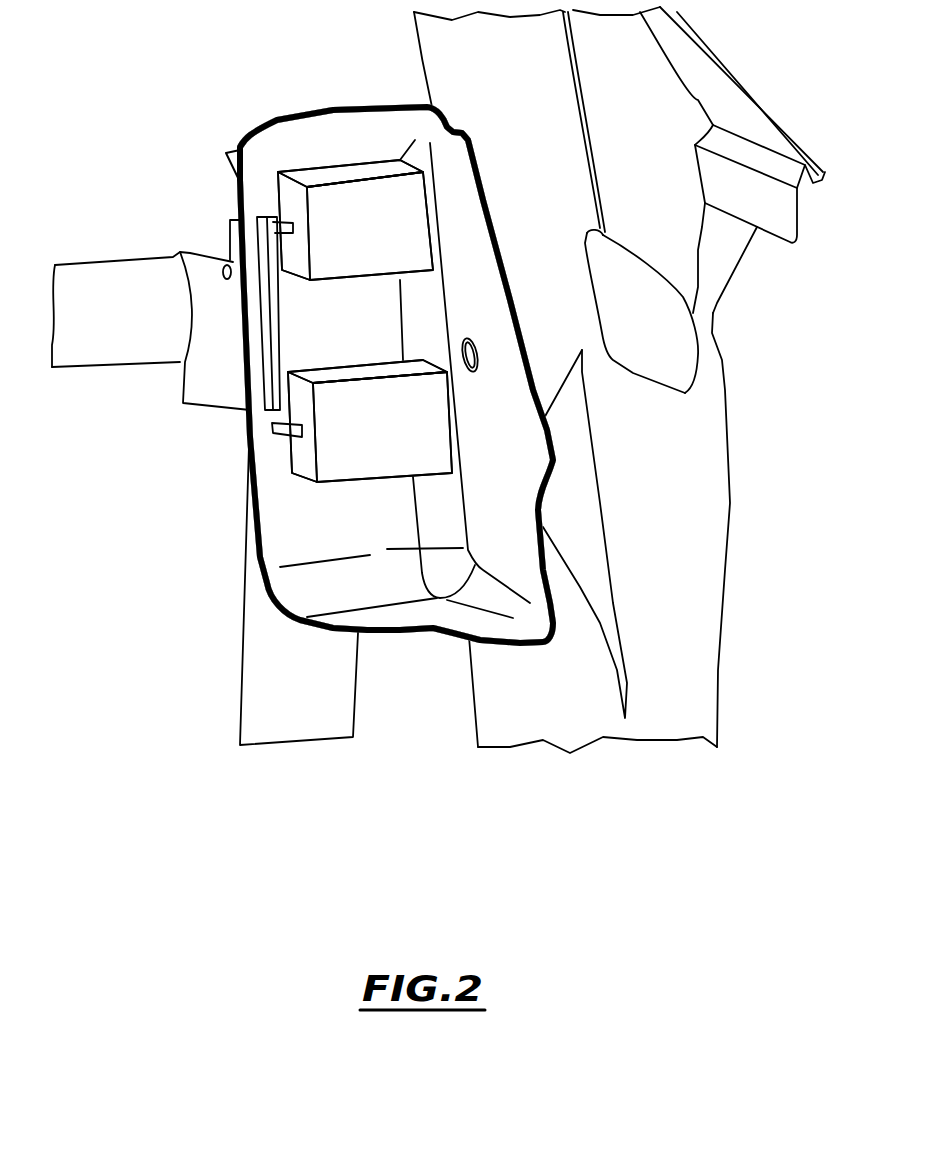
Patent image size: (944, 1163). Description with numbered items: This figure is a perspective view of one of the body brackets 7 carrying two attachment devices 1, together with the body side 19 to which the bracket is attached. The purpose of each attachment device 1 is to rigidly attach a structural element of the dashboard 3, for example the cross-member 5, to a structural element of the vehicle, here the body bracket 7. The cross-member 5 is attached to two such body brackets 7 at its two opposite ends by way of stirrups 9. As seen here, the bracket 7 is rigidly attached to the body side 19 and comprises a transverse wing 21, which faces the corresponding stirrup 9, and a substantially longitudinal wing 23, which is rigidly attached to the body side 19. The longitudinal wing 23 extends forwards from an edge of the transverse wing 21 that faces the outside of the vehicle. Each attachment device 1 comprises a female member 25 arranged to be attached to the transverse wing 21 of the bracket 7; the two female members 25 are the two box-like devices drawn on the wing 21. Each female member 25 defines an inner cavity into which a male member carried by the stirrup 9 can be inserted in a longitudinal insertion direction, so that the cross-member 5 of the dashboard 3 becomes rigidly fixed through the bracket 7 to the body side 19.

The attachment device 1 is at (314, 166).
The dashboard 3 is at (82, 143).
The cross-member 5 is at (113, 352).
The body bracket 7 is at (284, 591).
The stirrup 9 is at (233, 163).
The body side 19 is at (596, 302).
The transverse wing 21 is at (280, 512).
The longitudinal wing 23 is at (513, 448).
The female member 25 is at (377, 255).